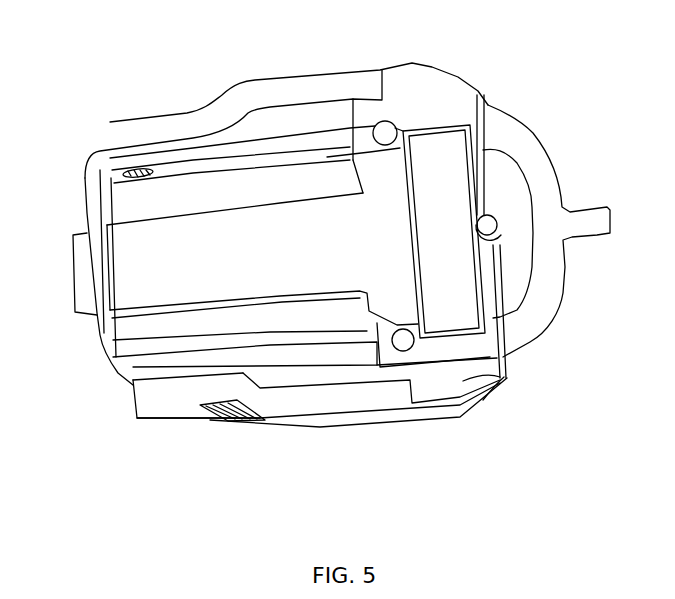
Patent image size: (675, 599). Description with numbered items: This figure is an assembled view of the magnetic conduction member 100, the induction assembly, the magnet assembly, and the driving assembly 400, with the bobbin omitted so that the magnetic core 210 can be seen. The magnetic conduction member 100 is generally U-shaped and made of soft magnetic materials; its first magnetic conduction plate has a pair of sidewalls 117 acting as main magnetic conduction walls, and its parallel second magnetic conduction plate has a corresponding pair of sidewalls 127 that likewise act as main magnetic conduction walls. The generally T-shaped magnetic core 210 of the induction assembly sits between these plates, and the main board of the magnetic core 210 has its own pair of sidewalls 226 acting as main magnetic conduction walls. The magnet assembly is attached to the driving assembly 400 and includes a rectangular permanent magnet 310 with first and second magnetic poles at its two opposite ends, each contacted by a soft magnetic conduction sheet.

The magnetic conduction member 100 is at (110, 337).
The sidewall 117 is at (299, 160).
The sidewall 127 is at (300, 363).
The magnetic core 210 is at (280, 220).
The sidewall 226 is at (178, 257).
The magnet 310 is at (442, 195).
The driving assembly 400 is at (500, 376).